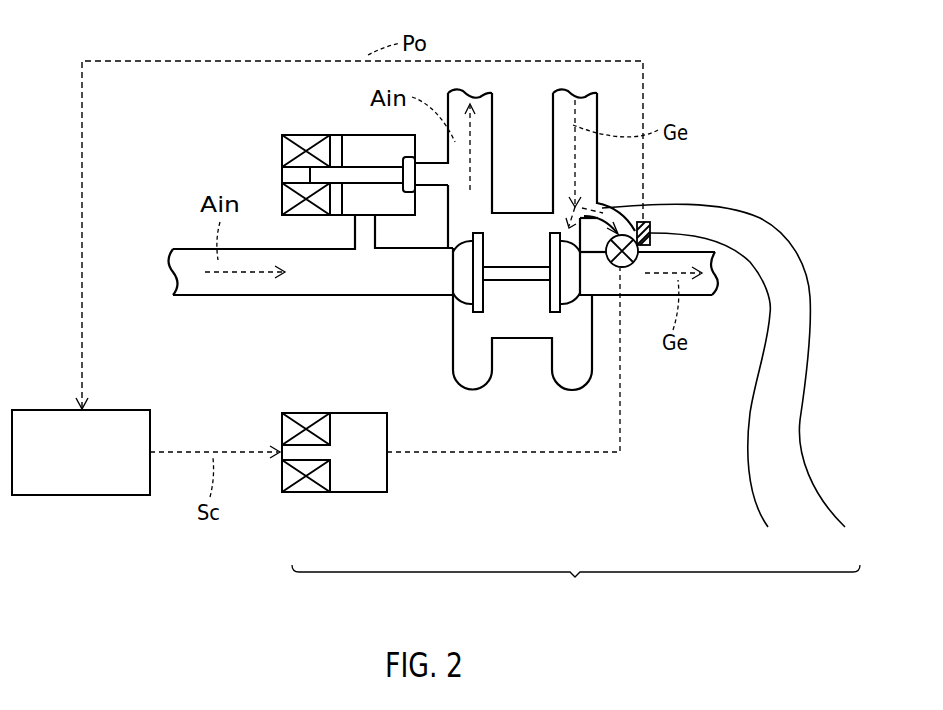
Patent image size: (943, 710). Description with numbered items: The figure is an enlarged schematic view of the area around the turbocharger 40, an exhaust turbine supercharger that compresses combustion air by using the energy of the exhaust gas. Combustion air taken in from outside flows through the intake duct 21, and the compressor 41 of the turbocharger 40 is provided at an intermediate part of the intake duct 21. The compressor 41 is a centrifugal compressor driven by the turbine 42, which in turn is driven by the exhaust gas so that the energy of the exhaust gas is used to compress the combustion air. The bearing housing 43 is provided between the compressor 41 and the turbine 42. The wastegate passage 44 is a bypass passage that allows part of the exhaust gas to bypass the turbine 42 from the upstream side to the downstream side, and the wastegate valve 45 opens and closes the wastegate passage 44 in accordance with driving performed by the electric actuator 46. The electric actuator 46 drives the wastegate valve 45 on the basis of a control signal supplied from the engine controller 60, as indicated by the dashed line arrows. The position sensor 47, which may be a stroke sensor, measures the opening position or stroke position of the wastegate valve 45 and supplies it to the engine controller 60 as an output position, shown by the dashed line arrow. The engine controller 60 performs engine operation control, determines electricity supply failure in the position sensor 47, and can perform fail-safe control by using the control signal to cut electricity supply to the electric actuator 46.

The intake duct 21 is at (303, 133).
The turbocharger 40 is at (576, 588).
The compressor 41 is at (480, 283).
The turbine 42 is at (560, 282).
The bearing housing 43 is at (527, 315).
The wastegate passage 44 is at (730, 382).
The wastegate valve 45 is at (630, 287).
The electric actuator 46 is at (310, 497).
The position sensor 47 is at (716, 397).
The engine controller 60 is at (82, 497).